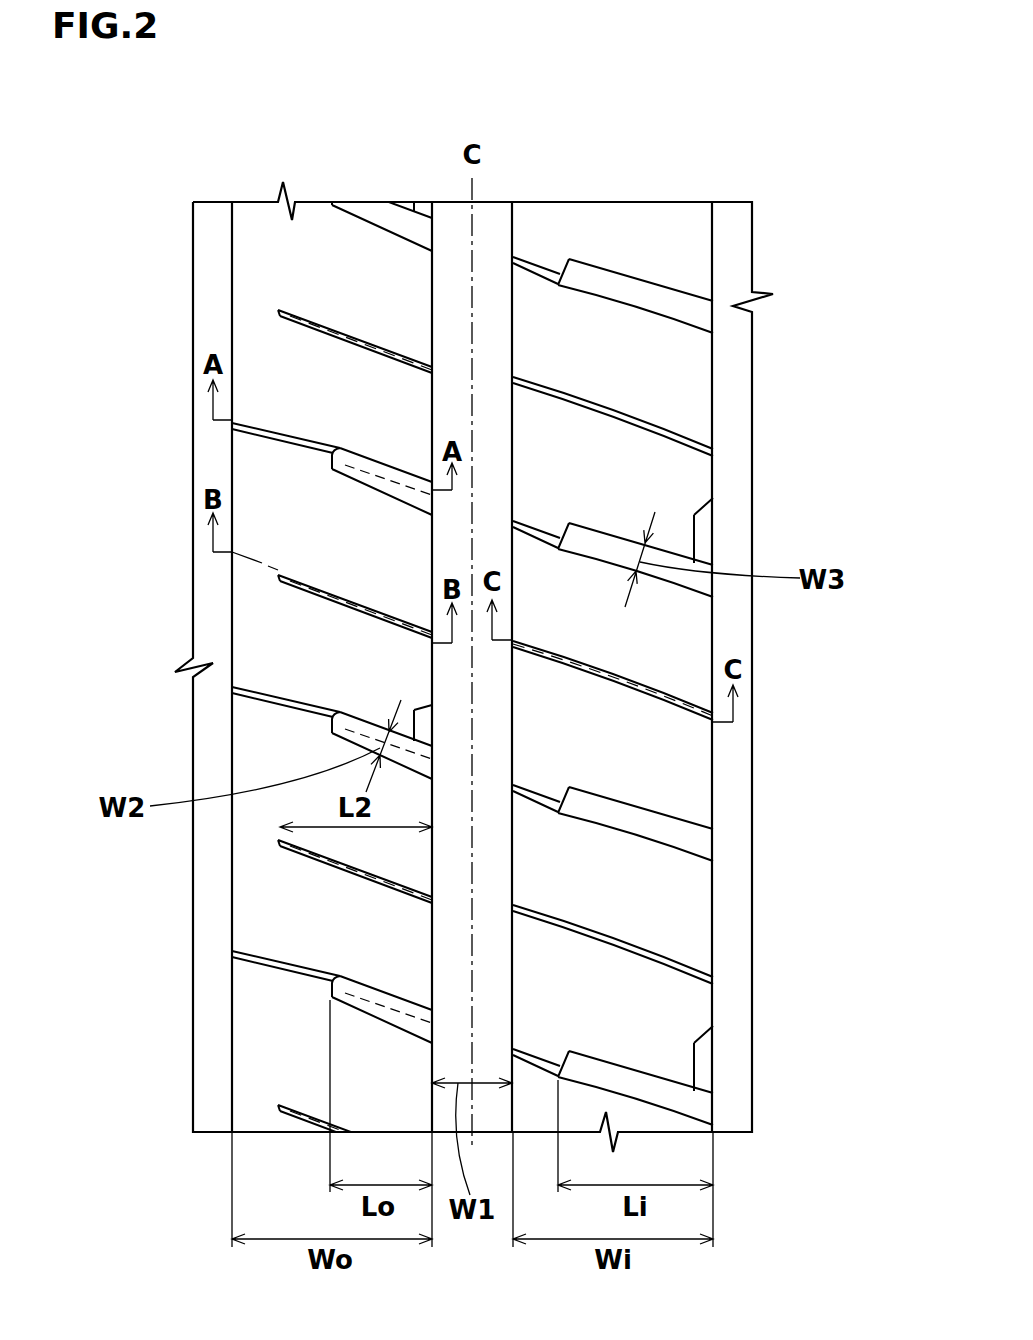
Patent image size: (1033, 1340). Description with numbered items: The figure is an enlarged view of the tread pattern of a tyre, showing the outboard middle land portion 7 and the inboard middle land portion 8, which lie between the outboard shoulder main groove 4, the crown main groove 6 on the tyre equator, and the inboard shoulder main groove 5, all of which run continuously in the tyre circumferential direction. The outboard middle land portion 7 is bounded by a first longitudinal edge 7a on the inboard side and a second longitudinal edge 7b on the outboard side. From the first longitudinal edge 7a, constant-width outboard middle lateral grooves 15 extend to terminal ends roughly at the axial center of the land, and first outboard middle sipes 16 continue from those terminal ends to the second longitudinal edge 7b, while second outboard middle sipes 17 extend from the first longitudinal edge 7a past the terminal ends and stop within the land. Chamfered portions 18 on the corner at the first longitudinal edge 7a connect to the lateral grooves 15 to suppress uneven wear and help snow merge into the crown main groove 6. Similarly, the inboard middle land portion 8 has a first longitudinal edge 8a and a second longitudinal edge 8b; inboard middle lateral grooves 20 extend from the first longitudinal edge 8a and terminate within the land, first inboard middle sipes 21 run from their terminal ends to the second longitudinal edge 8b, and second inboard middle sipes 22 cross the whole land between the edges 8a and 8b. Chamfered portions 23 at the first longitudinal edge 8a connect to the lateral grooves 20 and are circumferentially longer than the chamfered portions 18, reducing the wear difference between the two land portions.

The outboard shoulder main groove 4 is at (218, 222).
The inboard shoulder main groove 5 is at (738, 227).
The crown main groove 6 is at (457, 245).
The outboard middle land portion 7 is at (338, 245).
The first longitudinal edge 7a is at (432, 340).
The second longitudinal edge 7b is at (232, 290).
The inboard middle land portion 8 is at (600, 227).
The first longitudinal edge 8a is at (713, 390).
The second longitudinal edge 8b is at (512, 430).
The outboard middle lateral groove 15 is at (347, 477).
The first outboard middle sipe 16 is at (268, 432).
The second outboard middle sipe 17 is at (325, 598).
The chamfered portion 18 is at (420, 722).
The inboard middle lateral groove 20 is at (644, 293).
The first inboard middle sipe 21 is at (537, 795).
The second inboard middle sipe 22 is at (648, 428).
The chamfered portion 23 is at (707, 532).